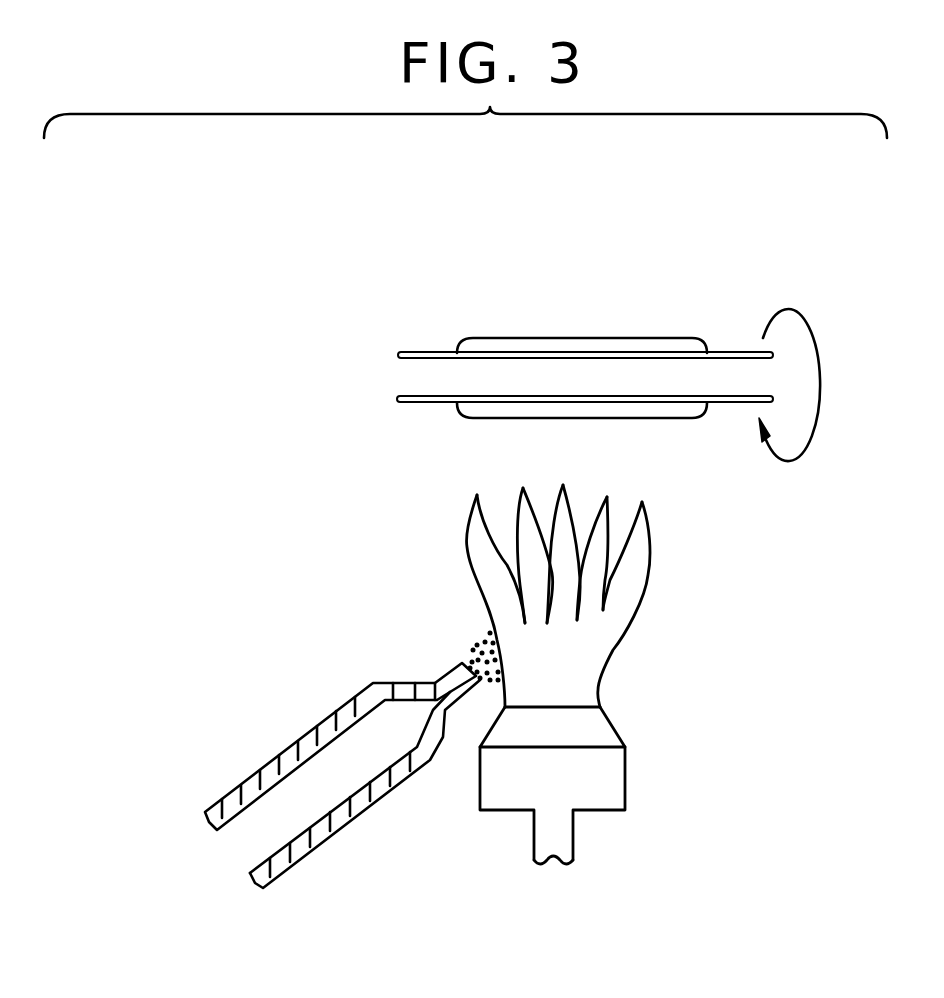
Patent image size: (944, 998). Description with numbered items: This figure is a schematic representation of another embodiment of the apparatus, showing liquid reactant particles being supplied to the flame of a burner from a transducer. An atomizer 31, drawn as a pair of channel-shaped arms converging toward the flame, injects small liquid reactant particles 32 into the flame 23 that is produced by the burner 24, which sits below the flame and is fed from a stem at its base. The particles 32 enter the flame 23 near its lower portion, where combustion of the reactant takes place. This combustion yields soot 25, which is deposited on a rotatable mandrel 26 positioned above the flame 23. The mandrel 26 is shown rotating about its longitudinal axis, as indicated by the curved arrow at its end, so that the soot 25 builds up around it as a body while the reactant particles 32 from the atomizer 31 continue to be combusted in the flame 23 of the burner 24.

The flame 23 is at (598, 642).
The burner 24 is at (614, 775).
The soot 25 is at (480, 410).
The rotatable mandrel 26 is at (428, 375).
The atomizer 31 is at (345, 705).
The liquid reactant particles 32 is at (477, 645).